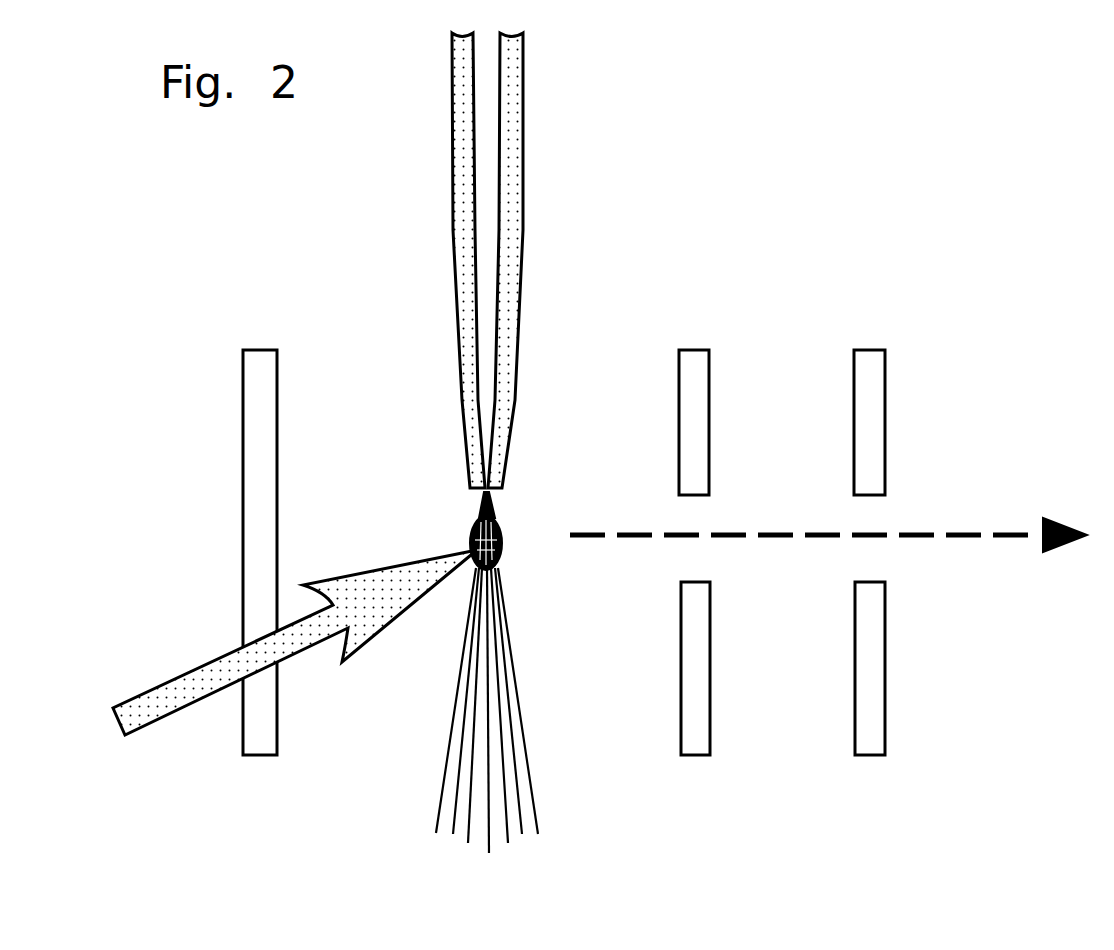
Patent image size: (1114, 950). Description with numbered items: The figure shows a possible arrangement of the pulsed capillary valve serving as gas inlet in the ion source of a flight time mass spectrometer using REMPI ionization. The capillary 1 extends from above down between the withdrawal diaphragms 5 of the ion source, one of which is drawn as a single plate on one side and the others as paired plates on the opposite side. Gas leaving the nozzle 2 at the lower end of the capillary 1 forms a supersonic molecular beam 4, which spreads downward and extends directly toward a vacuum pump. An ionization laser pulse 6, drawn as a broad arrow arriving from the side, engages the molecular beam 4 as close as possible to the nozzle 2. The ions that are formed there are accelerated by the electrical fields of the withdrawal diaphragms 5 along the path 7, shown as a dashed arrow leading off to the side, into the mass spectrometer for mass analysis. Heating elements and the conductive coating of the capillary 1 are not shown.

The capillary 1 is at (517, 108).
The nozzle 2 is at (585, 390).
The supersonic molecular beam 4 is at (480, 713).
The withdrawal diaphragms 5 is at (260, 375).
The laser pulse 6 is at (195, 682).
The path 7 is at (938, 535).